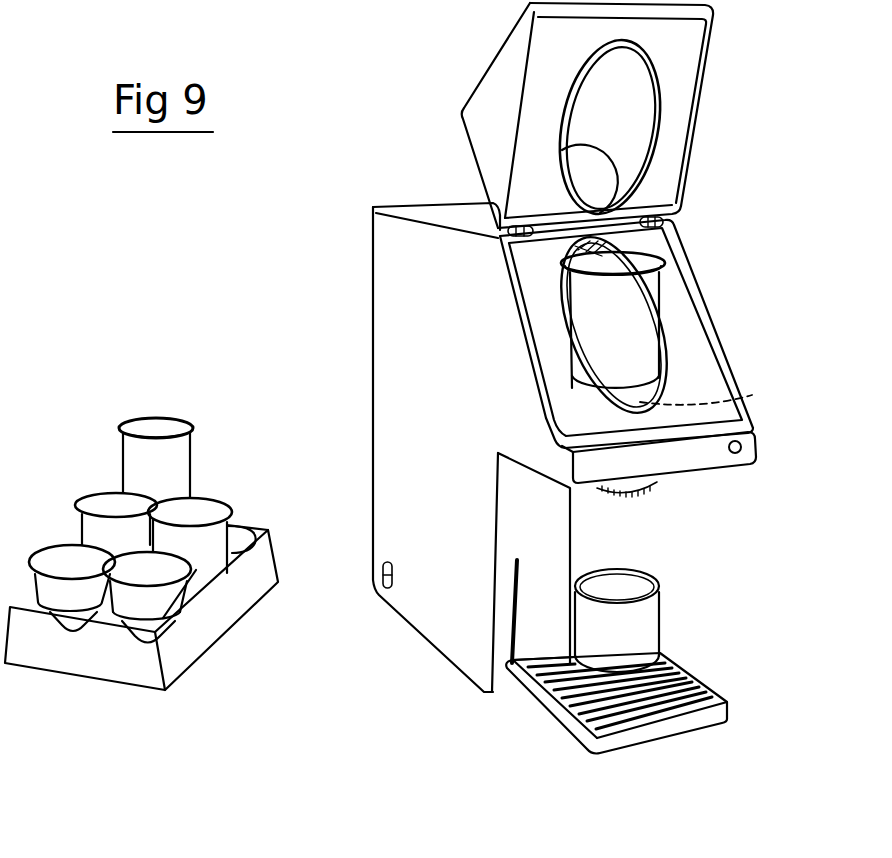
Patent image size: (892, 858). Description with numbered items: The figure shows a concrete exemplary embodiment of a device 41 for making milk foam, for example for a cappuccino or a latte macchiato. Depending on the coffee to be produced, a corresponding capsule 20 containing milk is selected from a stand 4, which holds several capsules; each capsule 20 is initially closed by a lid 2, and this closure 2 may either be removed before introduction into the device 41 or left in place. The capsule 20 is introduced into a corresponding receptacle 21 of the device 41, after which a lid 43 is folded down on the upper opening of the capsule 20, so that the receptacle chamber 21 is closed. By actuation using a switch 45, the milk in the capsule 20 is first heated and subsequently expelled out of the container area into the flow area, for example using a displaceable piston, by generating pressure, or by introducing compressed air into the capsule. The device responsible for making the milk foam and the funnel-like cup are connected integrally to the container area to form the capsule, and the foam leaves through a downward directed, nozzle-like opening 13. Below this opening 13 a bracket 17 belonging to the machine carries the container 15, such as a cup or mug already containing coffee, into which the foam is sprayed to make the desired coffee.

The lid 2 is at (157, 425).
The stand 4 is at (207, 623).
The opening 13 is at (717, 400).
The container 15 is at (638, 535).
The bracket 17 is at (707, 687).
The capsule 20 is at (632, 318).
The receptacle 21 is at (657, 361).
The device 41 is at (697, 296).
The lid 43 is at (697, 137).
The switch 45 is at (741, 449).